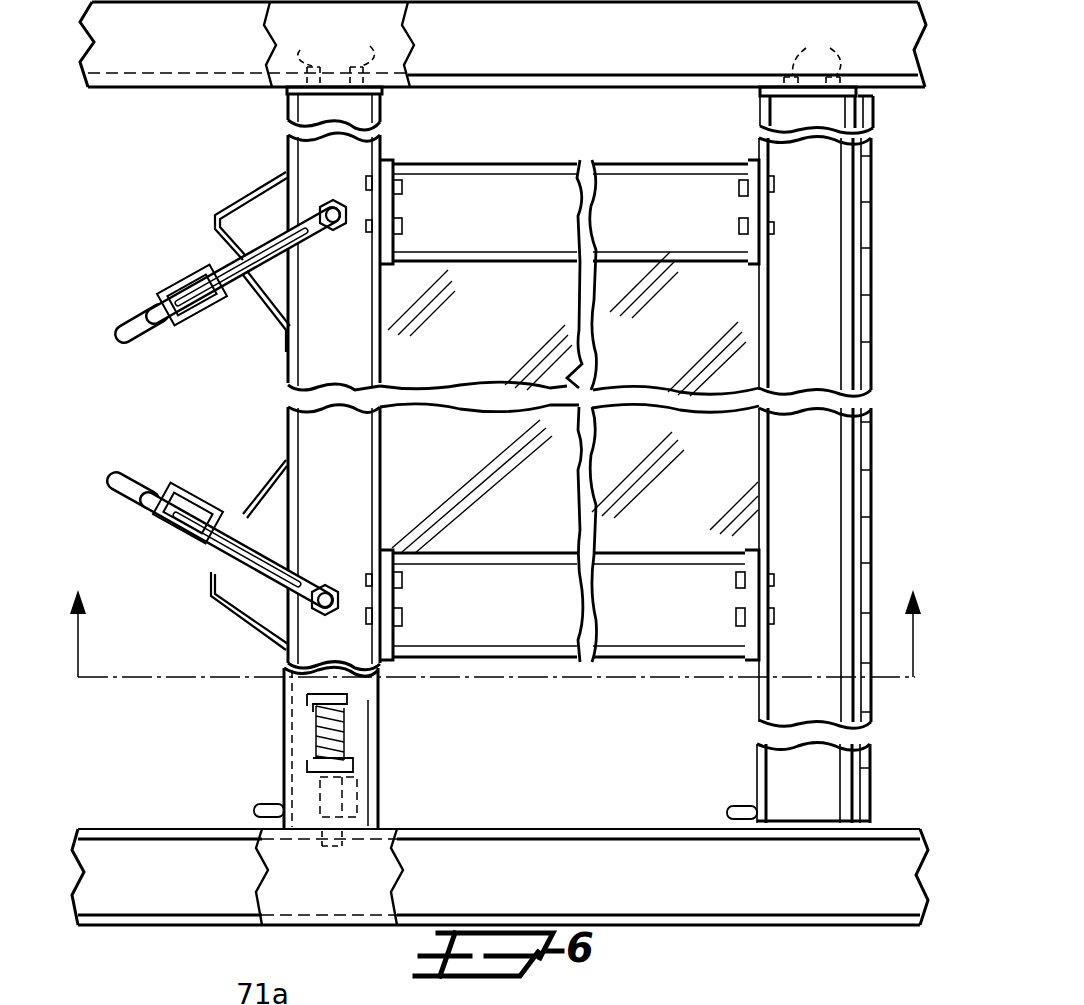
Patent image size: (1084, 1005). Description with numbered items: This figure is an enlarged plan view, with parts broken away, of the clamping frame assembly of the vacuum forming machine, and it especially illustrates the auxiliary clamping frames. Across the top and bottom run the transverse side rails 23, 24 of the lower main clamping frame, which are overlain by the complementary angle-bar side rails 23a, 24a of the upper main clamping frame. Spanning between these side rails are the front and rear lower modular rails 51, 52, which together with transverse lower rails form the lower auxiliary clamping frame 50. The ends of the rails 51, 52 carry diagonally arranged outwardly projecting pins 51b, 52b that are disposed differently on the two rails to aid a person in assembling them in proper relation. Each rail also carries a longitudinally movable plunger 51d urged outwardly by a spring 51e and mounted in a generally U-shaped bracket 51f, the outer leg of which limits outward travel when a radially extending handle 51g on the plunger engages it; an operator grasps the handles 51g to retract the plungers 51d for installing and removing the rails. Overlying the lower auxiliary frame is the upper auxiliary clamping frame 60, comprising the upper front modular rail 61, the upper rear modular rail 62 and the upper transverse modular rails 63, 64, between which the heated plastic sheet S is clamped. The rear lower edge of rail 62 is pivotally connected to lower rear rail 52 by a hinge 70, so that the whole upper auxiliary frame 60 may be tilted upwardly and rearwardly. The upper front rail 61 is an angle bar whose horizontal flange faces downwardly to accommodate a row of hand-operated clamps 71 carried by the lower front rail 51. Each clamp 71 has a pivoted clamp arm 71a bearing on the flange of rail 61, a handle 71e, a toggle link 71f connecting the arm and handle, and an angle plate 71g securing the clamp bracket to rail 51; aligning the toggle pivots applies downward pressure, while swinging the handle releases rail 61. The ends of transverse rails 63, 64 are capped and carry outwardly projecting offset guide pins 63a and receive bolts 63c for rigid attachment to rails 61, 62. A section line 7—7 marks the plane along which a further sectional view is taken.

The transverse side frame member 23 is at (356, 31).
The upper side rail 23a is at (536, 48).
The outwardly projecting pins 51b is at (336, 58).
The outwardly projecting pins 52b is at (811, 51).
The transverse side frame member 24 is at (375, 892).
The upper side rail 24a is at (506, 897).
The plunger 51d is at (309, 865).
The upper front modular rail 61 is at (346, 452).
The upper rear modular rail 62 is at (820, 502).
The hinge 70 is at (868, 490).
The upper transverse modular rail 64 is at (552, 222).
The upper transverse modular rail 63 is at (544, 610).
The offset guide pin 63a is at (364, 232).
The bolt 63c is at (404, 190).
The sheet of plastic material S is at (496, 347).
The hand-operated clamp 71 is at (175, 262).
The clamp arm 71a is at (227, 548).
The handle 71e is at (128, 476).
The toggle link 71f is at (192, 490).
The angle plate 71g is at (236, 612).
The lower auxiliary clamping frame 50 is at (262, 746).
The front lower modular rail 51 is at (284, 716).
The spring 51e is at (350, 732).
The U-shaped bracket 51f is at (355, 768).
The handle 51g is at (266, 804).
The rear lower modular rail 52 is at (820, 826).
The upper auxiliary clamping frame 60 is at (640, 672).
The section line 7- 7 is at (495, 658).